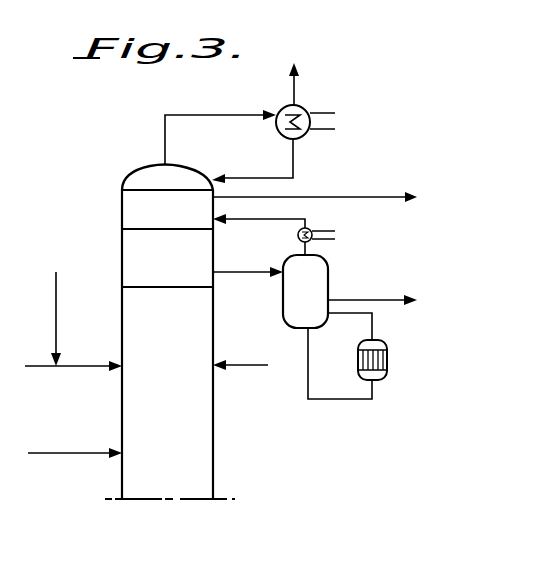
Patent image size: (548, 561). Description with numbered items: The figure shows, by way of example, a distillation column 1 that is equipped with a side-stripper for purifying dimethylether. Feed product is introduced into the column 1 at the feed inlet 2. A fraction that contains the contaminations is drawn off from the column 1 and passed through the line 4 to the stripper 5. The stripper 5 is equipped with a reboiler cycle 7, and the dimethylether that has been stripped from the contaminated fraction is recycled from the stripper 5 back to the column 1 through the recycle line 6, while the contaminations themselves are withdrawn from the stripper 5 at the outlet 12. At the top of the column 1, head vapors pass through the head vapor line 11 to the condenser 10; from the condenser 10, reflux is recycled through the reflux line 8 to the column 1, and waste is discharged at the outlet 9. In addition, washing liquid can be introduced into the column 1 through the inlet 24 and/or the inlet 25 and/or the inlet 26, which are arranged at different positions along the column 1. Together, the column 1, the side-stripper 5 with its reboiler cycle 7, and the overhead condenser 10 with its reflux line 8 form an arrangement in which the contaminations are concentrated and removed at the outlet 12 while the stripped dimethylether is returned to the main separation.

The column 1 is at (177, 421).
The feed inlet 2 is at (73, 353).
The fraction line to stripper 4 is at (258, 299).
The stripper 5 is at (305, 291).
The recycle line 6 is at (274, 234).
The reboiler cycle 7 is at (347, 356).
The reflux line 8 is at (252, 161).
The waste discharge 9 is at (283, 71).
The condenser 10 is at (340, 162).
The head vapor line 11 is at (218, 105).
The contaminations outlet 12 is at (378, 295).
The washing liquid inlet 24 is at (95, 446).
The washing liquid inlet 25 is at (74, 319).
The washing liquid inlet 26 is at (277, 357).